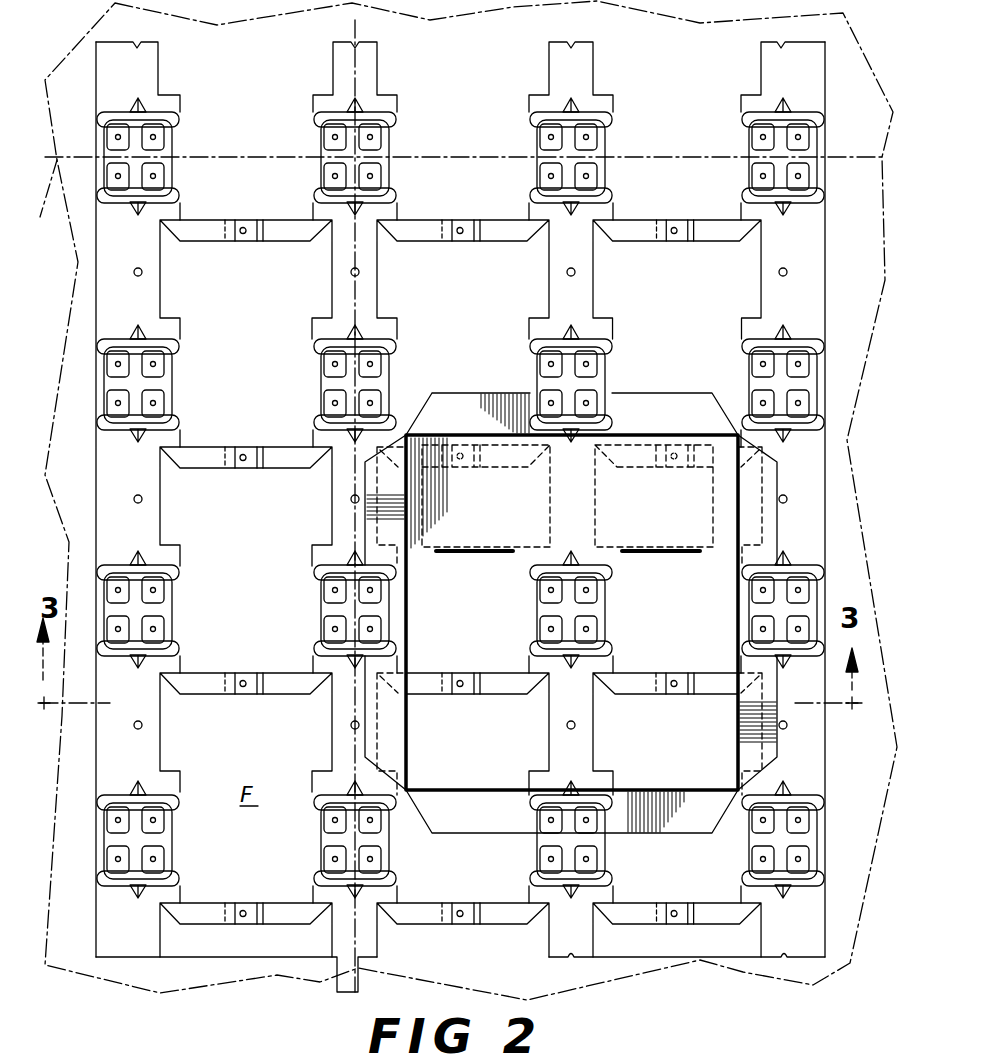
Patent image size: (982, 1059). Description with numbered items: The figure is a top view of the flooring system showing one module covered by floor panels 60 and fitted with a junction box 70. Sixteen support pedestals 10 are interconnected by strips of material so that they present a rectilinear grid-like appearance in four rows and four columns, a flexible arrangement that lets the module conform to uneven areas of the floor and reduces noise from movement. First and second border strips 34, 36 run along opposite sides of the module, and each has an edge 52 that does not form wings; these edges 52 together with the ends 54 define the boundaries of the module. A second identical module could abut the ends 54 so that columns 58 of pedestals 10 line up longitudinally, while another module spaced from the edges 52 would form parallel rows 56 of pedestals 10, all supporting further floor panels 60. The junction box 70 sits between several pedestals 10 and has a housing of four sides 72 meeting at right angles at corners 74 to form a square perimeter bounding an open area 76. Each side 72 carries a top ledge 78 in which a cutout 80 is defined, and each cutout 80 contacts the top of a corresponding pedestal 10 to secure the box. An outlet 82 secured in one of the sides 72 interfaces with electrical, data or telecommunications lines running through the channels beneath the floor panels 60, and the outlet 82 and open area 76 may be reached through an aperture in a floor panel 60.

The support pedestal 10 is at (318, 372).
The first border strip 34 is at (117, 55).
The second border strip 36 is at (797, 62).
The edge 52 is at (827, 255).
The end 54 is at (553, 44).
The row 56 is at (53, 203).
The column 58 is at (358, 24).
The floor panel 60 is at (258, 28).
The junction box 70 is at (657, 840).
The side 72 is at (498, 786).
The corner 74 is at (406, 432).
The open area 76 is at (488, 614).
The top ledge 78 is at (512, 412).
The cutout 80 is at (578, 414).
The outlet 82 is at (657, 553).